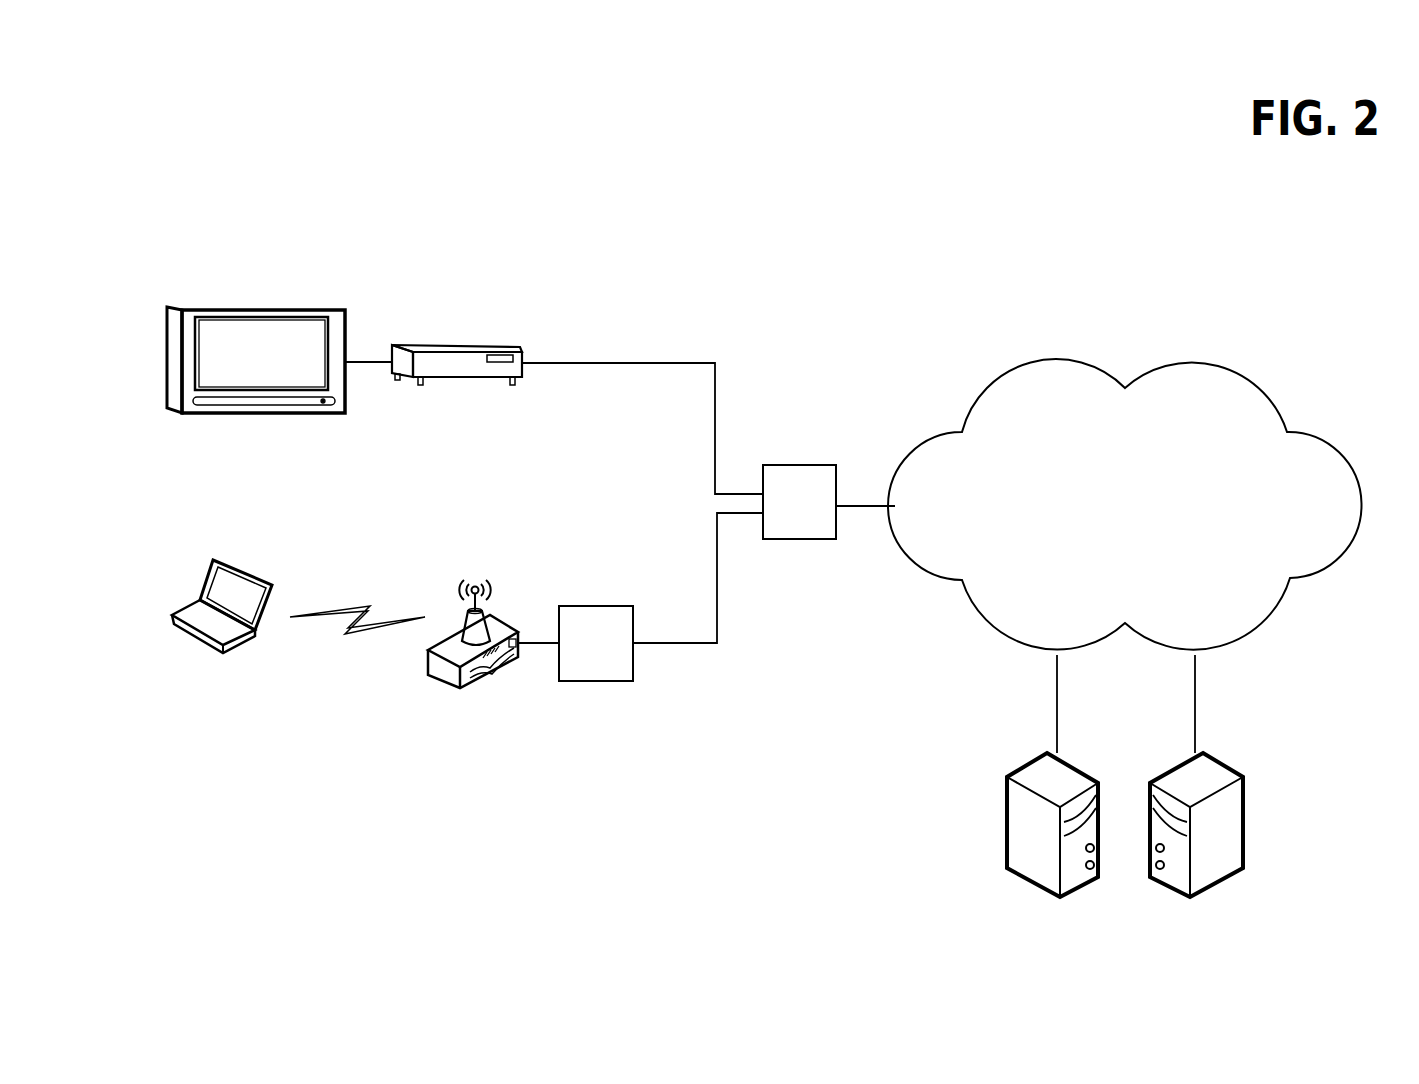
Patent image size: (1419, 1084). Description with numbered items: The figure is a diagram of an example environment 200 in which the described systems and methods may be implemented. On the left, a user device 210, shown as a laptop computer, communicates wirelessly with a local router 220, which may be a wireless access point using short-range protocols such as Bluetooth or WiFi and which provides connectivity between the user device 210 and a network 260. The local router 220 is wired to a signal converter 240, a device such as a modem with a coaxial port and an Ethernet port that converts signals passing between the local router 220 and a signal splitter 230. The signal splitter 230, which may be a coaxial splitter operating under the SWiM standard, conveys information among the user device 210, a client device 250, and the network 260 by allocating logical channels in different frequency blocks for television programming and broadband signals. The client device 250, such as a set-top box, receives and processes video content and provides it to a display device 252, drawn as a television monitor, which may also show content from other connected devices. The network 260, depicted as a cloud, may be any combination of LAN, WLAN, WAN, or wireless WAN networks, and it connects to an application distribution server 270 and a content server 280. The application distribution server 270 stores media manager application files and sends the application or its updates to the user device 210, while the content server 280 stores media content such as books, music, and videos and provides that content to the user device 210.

The environment 200 is at (228, 118).
The user device 210 is at (217, 558).
The local router 220 is at (458, 690).
The signal splitter 230 is at (833, 465).
The signal converter 240 is at (625, 606).
The client device 250 is at (488, 347).
The display device 252 is at (287, 305).
The network 260 is at (1125, 556).
The application distribution server 270 is at (1007, 775).
The content server 280 is at (1245, 775).